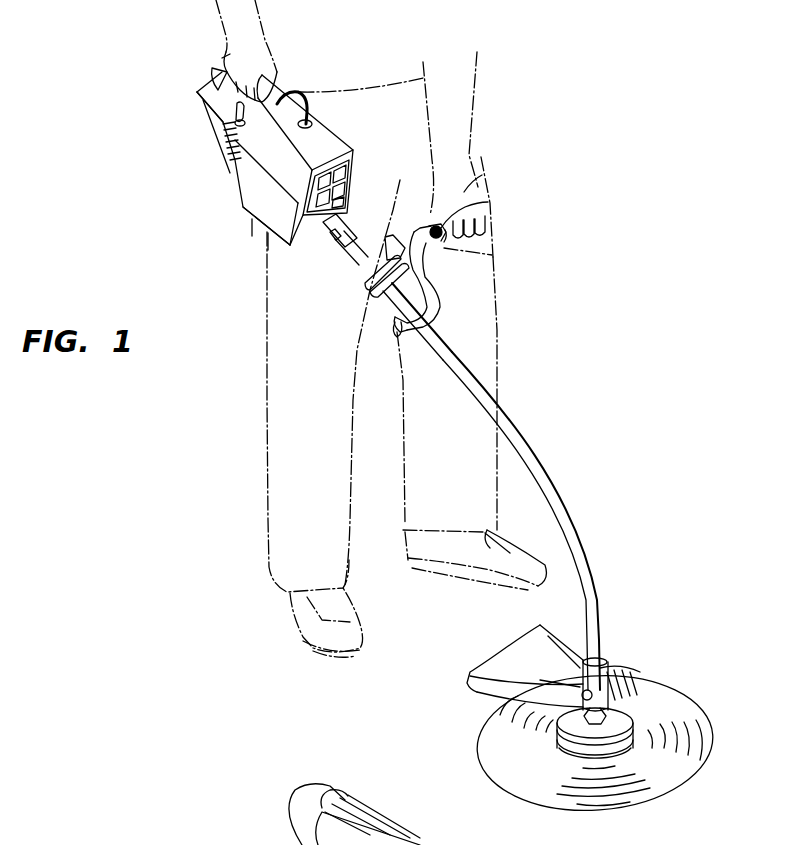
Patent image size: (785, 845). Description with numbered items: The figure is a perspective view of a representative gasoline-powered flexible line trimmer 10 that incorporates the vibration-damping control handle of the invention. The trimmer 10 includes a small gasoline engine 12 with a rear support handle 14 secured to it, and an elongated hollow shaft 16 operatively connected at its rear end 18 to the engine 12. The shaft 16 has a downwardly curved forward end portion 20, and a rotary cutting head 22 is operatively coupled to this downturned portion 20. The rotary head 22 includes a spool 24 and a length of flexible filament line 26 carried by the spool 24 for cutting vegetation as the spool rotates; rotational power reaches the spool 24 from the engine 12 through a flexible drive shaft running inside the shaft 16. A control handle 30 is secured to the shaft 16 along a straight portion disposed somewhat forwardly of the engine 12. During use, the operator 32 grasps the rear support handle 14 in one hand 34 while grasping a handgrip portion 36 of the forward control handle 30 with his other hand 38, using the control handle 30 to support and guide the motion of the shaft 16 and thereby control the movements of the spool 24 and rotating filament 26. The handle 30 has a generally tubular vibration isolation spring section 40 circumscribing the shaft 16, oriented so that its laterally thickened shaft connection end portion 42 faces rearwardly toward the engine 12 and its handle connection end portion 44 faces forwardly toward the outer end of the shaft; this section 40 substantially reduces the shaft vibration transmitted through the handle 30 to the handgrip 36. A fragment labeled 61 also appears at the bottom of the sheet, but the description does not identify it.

The flexible line trimmer 10 is at (510, 372).
The gasoline engine 12 is at (232, 176).
The rear support handle 14 is at (216, 66).
The elongated hollow shaft 16 is at (457, 356).
The rear end 18 is at (347, 252).
The downwardly curved forward end portion 20 is at (571, 504).
The rotary cutting head 22 is at (622, 690).
The spool 24 is at (614, 757).
The flexible filament line 26 is at (598, 812).
The control handle 30 is at (445, 282).
The operator 32 is at (262, 298).
The hand 34 is at (260, 50).
The handgrip portion 36 is at (442, 236).
The other hand 38 is at (462, 195).
The vibration isolation spring section 40 is at (388, 313).
The shaft connection end portion 42 is at (368, 278).
The handle connection end portion 44 is at (397, 333).
The cord retainer 61 is at (439, 843).